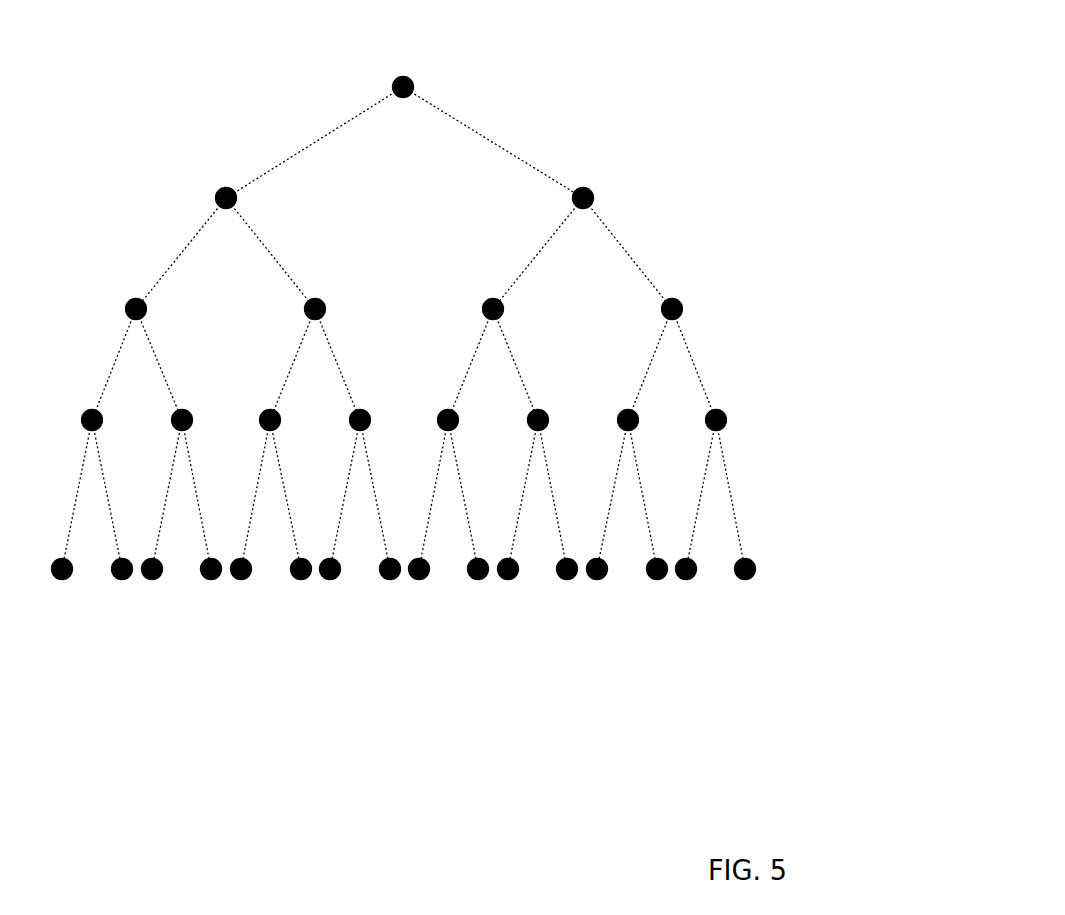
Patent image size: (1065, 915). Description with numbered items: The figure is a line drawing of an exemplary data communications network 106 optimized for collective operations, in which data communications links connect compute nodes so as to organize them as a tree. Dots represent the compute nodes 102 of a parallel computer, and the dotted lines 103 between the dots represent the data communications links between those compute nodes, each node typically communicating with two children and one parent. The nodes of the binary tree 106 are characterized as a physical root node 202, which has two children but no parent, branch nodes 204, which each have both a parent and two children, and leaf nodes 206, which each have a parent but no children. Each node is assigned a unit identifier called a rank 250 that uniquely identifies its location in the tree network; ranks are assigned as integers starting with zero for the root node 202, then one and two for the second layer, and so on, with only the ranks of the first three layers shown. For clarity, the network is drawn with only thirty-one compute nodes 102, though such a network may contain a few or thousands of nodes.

The data communications network optimized for collective operations 106 is at (453, 413).
The data communications links 103 is at (323, 138).
The compute nodes 102 is at (458, 413).
The physical root node 202 is at (422, 78).
The branch nodes 204 is at (768, 147).
The leaf nodes 206 is at (478, 578).
The rank 250 is at (547, 207).